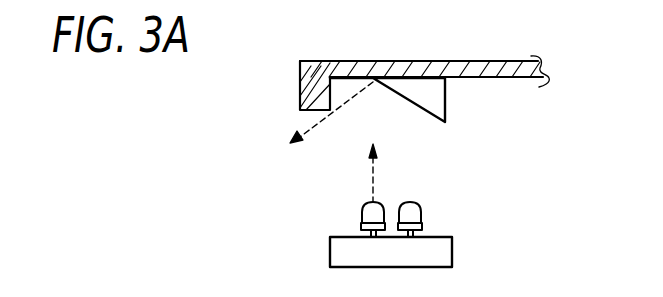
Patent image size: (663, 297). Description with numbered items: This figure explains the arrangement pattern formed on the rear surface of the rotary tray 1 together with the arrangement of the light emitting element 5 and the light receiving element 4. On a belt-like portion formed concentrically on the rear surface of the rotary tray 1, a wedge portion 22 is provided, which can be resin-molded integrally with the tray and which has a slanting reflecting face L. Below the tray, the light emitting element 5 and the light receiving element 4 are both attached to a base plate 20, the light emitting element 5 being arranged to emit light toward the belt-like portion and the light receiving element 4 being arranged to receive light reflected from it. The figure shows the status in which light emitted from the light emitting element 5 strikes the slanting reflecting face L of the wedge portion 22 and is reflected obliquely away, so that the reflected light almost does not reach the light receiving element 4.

The rotary tray 1 is at (413, 70).
The wedge portion 22 is at (443, 98).
The slanting reflecting face L is at (400, 102).
The light emitting element 5 is at (357, 216).
The light receiving element 4 is at (420, 212).
The base plate 20 is at (442, 252).